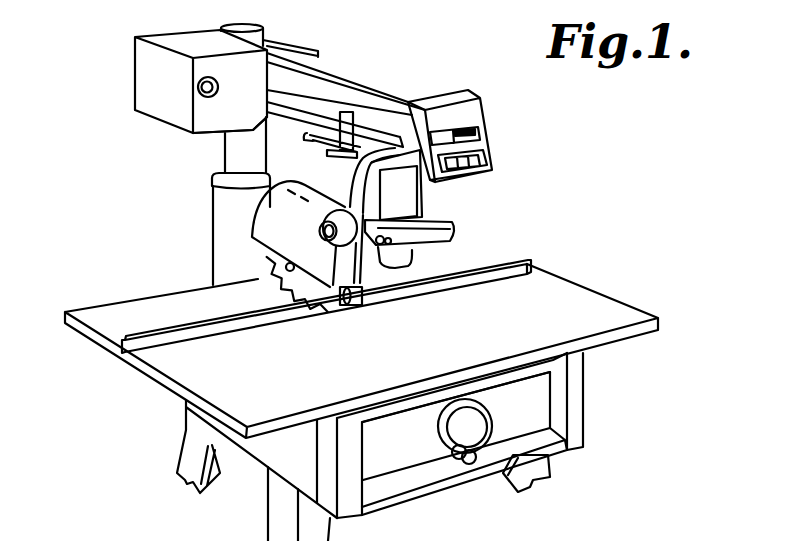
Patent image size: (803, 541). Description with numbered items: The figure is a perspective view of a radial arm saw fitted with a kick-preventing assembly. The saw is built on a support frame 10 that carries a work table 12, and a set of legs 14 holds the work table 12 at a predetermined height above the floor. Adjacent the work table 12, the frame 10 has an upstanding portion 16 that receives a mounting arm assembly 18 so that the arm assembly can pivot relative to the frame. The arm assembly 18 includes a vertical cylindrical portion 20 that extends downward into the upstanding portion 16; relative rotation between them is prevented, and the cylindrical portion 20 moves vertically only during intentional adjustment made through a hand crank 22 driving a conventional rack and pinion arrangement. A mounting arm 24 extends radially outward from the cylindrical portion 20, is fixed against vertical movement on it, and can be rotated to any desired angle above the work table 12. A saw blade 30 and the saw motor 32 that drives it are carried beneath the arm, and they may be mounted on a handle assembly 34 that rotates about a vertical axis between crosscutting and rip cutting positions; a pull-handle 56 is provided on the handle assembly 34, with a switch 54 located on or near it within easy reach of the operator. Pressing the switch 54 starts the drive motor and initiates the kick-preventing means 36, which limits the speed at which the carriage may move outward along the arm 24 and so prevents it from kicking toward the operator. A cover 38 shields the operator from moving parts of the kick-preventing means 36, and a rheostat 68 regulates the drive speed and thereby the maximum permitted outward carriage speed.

The support frame 10 is at (183, 420).
The work table 12 is at (586, 305).
The legs 14 is at (534, 478).
The upstanding portion 16 is at (222, 210).
The mounting arm assembly 18 is at (292, 26).
The vertical cylindrical portion 20 is at (233, 150).
The hand crank 22 is at (483, 418).
The mounting arm 24 is at (388, 80).
The saw blade 30 is at (307, 307).
The saw motor 32 is at (342, 185).
The handle assembly 34 is at (443, 203).
The kick-preventing means 36 is at (157, 127).
The cover 38 is at (146, 78).
The switch 54 is at (382, 246).
The pull-handle 56 is at (458, 229).
The rheostat 68 is at (218, 88).